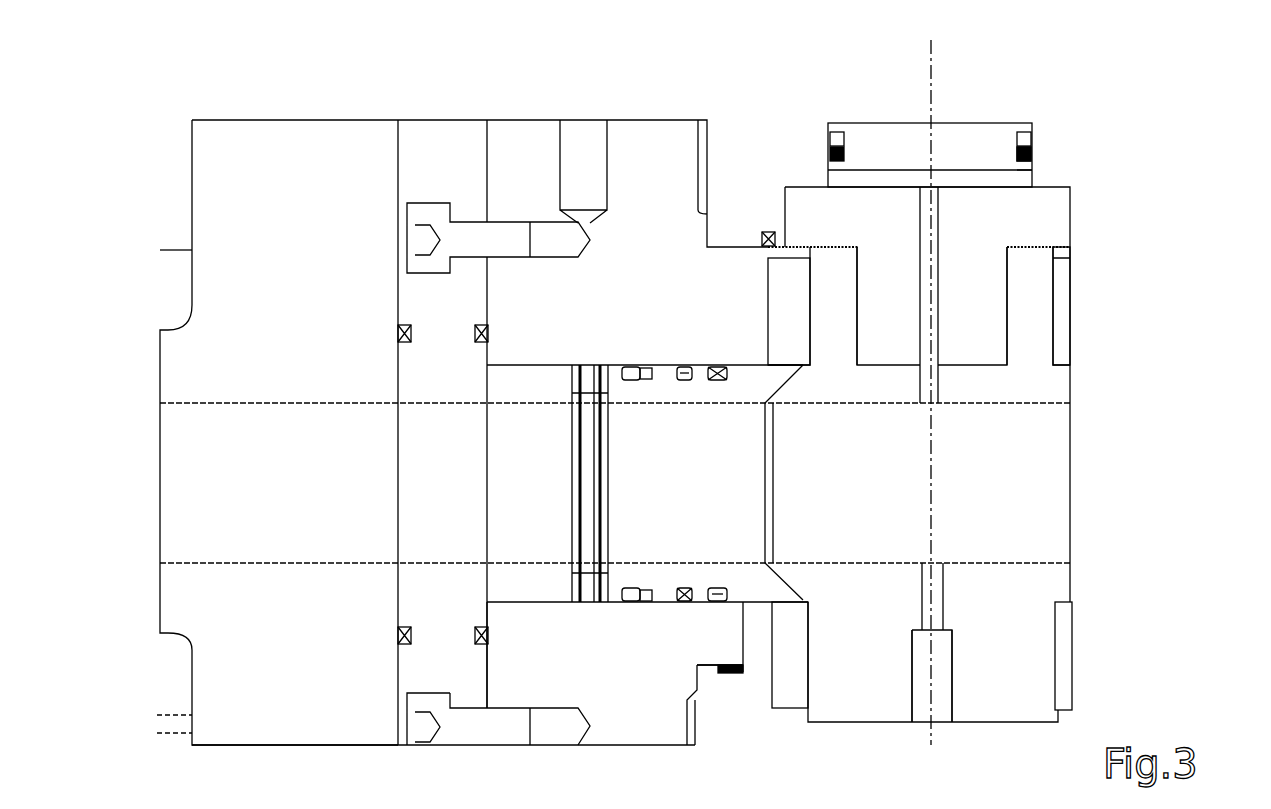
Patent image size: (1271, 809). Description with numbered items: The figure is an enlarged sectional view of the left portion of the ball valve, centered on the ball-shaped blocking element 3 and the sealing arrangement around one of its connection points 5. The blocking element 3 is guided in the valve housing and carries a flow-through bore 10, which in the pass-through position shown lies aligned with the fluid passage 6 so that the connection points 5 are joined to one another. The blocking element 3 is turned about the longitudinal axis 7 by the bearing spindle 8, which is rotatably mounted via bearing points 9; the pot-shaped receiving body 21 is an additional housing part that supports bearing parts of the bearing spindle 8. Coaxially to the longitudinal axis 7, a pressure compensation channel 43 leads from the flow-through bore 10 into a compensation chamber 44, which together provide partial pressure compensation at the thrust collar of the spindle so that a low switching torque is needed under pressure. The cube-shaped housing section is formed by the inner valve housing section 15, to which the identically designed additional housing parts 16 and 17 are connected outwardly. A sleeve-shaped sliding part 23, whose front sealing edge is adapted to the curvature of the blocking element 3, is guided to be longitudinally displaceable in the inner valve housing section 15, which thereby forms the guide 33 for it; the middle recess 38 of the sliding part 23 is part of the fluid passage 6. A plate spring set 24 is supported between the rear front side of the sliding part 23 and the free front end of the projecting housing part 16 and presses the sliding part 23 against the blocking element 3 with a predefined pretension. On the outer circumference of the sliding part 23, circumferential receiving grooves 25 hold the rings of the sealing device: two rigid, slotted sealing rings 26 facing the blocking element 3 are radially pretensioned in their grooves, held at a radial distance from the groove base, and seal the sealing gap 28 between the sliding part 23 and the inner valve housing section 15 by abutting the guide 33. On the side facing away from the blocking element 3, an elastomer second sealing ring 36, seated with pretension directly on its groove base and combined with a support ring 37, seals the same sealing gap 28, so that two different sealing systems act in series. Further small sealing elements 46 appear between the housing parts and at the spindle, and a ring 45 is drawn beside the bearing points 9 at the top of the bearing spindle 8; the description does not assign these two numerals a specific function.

The blocking element 3 is at (1048, 390).
The connection points 5 is at (574, 388).
The additional housing part 17 is at (574, 388).
The fluid passage 6 is at (270, 458).
The longitudinal axis 7 is at (935, 85).
The bearing spindle 8 is at (955, 135).
The bearing points 9 is at (1033, 135).
The flow-through bore 10 is at (1004, 463).
The inner valve housing section 15 is at (665, 170).
The additional housing part 16 is at (455, 165).
The pot-shaped receiving body 21 is at (765, 123).
The sleeve-shaped sliding part 23 is at (753, 585).
The plate spring set 24 is at (575, 482).
The receiving grooves 25 is at (710, 382).
The sealing ring 26 is at (718, 375).
The sealing gap 28 is at (727, 605).
The guide 33 is at (665, 607).
The second sealing ring 36 is at (628, 375).
The support ring 37 is at (640, 375).
The middle recess 38 is at (742, 480).
The pressure compensation channel 43 is at (945, 320).
The compensation chamber 44 is at (1033, 177).
The ring 45 is at (1037, 150).
The sealing ring 46 is at (481, 343).